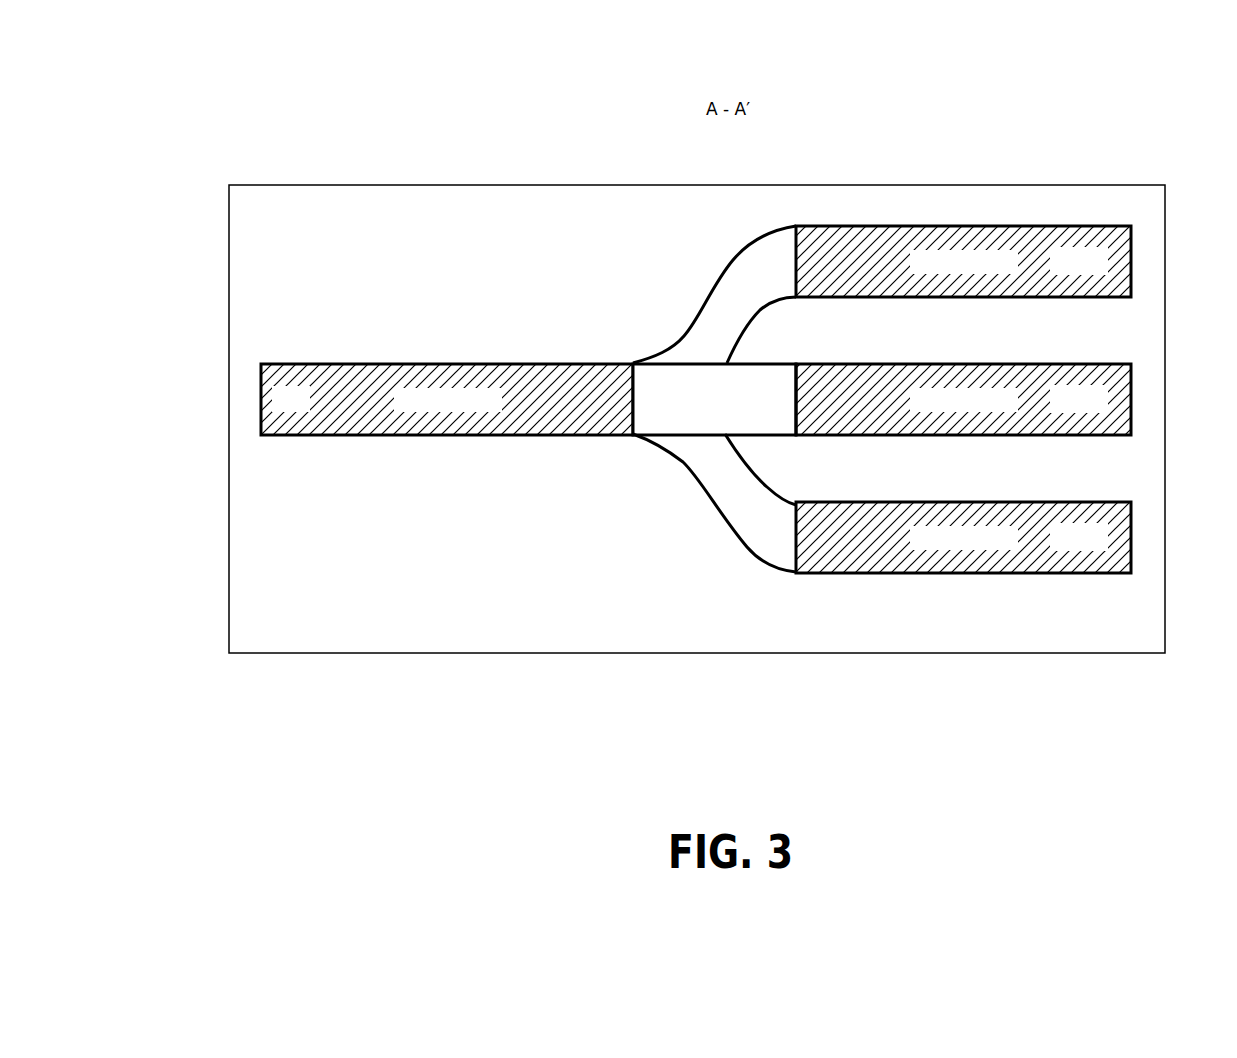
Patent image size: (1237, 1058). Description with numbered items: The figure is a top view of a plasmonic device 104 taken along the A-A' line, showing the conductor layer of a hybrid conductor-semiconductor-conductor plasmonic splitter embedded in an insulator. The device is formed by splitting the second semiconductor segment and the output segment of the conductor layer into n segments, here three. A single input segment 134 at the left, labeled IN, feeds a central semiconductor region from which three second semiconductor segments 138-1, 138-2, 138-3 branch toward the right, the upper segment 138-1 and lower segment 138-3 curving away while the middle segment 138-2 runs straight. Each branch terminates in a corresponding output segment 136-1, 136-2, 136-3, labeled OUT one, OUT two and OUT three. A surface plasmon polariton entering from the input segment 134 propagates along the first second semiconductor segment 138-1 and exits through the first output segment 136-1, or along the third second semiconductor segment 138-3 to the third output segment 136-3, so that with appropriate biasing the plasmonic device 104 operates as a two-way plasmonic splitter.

The plasmonic device 104 is at (210, 114).
The input segment 134 is at (261, 400).
The first output segment 136-1 is at (1131, 262).
The second output segment 136-2 is at (1131, 400).
The third output segment 136-3 is at (1131, 540).
The first second semiconductor segment 138-1 is at (767, 257).
The second second semiconductor segment 138-2 is at (692, 418).
The third second semiconductor segment 138-3 is at (758, 538).